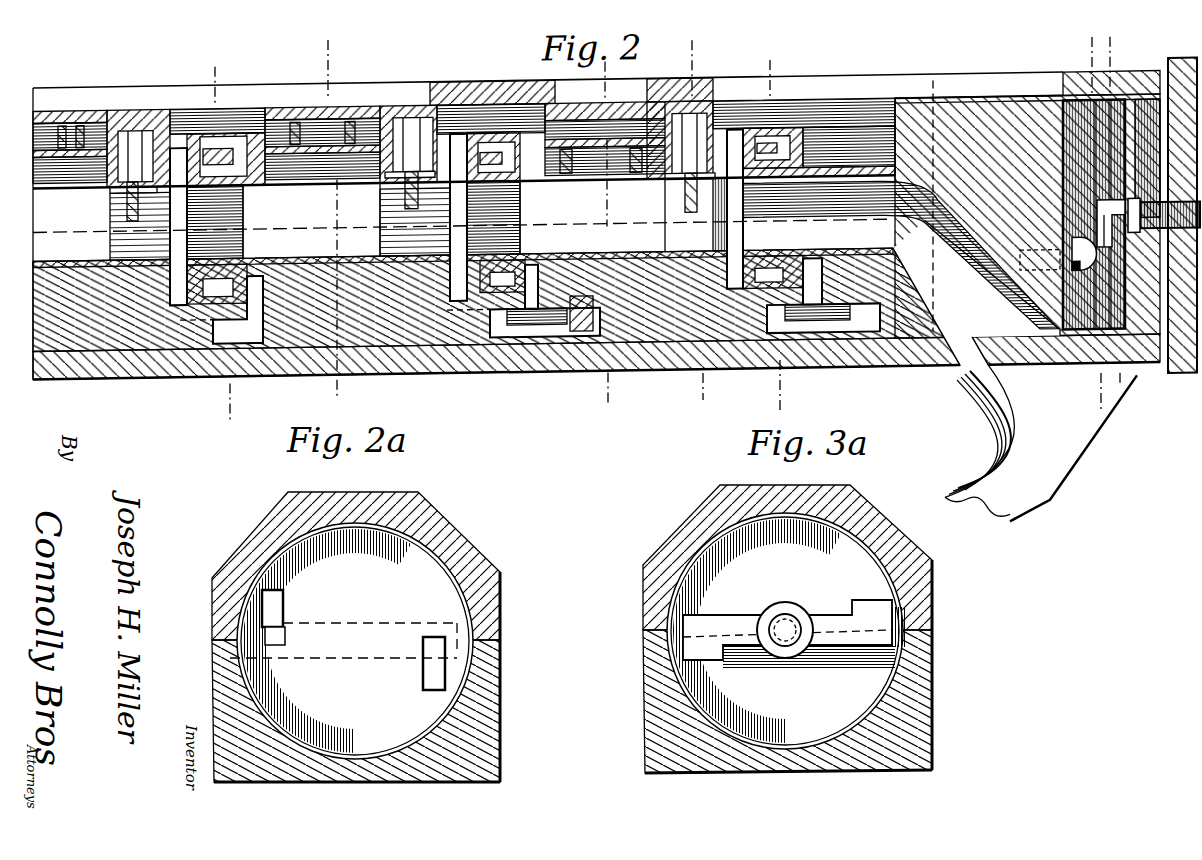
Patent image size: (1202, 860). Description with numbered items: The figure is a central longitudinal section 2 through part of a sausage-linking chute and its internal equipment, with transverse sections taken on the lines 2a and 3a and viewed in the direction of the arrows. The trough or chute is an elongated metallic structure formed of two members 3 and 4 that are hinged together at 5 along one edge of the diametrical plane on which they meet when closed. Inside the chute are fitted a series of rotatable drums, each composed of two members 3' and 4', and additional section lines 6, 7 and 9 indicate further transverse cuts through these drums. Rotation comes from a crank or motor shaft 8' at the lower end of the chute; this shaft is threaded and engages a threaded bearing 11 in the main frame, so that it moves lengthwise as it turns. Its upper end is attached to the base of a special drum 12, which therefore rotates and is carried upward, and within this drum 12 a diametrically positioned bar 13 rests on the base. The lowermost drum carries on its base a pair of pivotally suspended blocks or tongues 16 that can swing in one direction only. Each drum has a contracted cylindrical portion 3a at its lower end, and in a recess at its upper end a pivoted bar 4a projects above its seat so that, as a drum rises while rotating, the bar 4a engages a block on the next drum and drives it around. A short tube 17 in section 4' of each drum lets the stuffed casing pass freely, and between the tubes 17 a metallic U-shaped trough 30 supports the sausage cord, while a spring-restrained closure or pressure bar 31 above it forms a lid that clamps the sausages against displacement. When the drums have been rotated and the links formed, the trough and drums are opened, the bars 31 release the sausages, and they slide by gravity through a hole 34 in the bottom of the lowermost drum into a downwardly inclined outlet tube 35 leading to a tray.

In FIG. 2, the central longitudinal section 2 is at (740, 73).
In FIG. 2, the section line 2a is at (1080, 64).
In FIG. 2, the chute member 3 is at (1174, 215).
In FIG. 2A, the chute member 3 is at (372, 566).
In FIG. 2, the drum member 3' is at (548, 211).
In FIG. 3A, the drum member 3' is at (807, 557).
In FIG. 2, the contracted cylindrical portion 3a is at (1125, 66).
In FIG. 2A, the chute member 4 is at (374, 711).
In FIG. 3A, the chute member 4 is at (808, 701).
In FIG. 2, the drum member 4' is at (488, 334).
In FIG. 2, the pivoted bar 4a is at (525, 333).
In FIG. 2, the hinge 5 is at (672, 77).
In FIG. 2, the section line 6- 6 is at (338, 230).
In FIG. 2, the section line 7- 7 is at (582, 427).
In FIG. 2, the crank or motor shaft 8' is at (1164, 237).
In FIG. 3A, the crank or motor shaft 8' is at (785, 651).
In FIG. 2, the section line 9- 9 is at (197, 63).
In FIG. 2, the threaded bearing 11 is at (1150, 158).
In FIG. 2, the special drum 12 is at (977, 112).
In FIG. 2A, the special drum 12 is at (467, 582).
In FIG. 3A, the special drum 12 is at (863, 568).
In FIG. 2, the diametrically positioned bar 13 is at (1111, 223).
In FIG. 3A, the diametrically positioned bar 13 is at (733, 623).
In FIG. 2, the pivotally suspended blocks or tongues 16 is at (1085, 288).
In FIG. 2A, the pivotally suspended blocks or tongues 16 is at (287, 603).
In FIG. 2, the short tube 17 is at (245, 226).
In FIG. 2, the U-shaped trough 30 is at (278, 259).
In FIG. 2, the closure or pressure bar 31 is at (62, 191).
In FIG. 2, the hole 34 is at (1025, 368).
In FIG. 2, the outlet tube 35 is at (1042, 524).